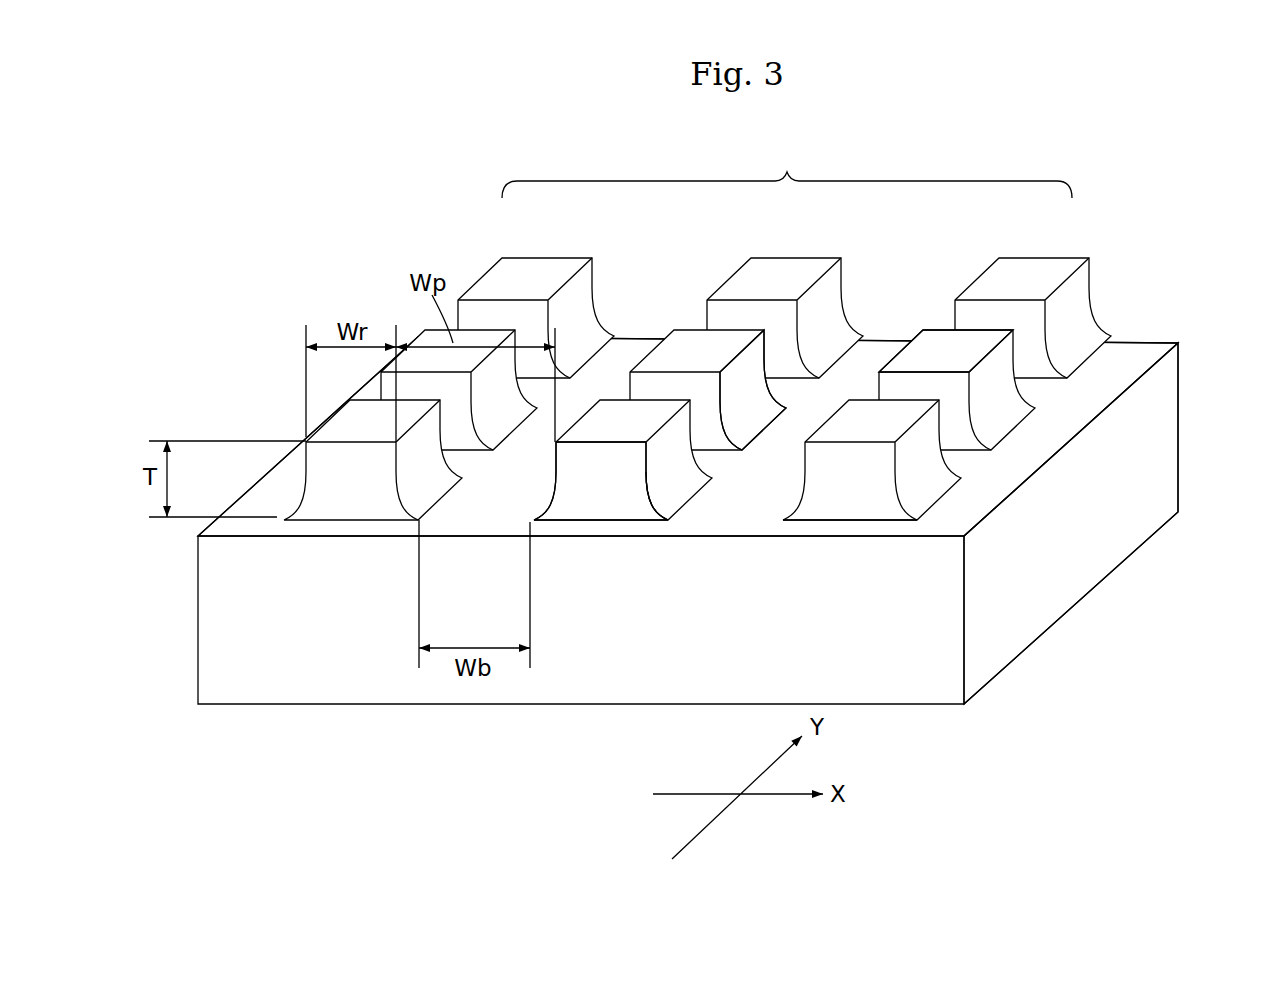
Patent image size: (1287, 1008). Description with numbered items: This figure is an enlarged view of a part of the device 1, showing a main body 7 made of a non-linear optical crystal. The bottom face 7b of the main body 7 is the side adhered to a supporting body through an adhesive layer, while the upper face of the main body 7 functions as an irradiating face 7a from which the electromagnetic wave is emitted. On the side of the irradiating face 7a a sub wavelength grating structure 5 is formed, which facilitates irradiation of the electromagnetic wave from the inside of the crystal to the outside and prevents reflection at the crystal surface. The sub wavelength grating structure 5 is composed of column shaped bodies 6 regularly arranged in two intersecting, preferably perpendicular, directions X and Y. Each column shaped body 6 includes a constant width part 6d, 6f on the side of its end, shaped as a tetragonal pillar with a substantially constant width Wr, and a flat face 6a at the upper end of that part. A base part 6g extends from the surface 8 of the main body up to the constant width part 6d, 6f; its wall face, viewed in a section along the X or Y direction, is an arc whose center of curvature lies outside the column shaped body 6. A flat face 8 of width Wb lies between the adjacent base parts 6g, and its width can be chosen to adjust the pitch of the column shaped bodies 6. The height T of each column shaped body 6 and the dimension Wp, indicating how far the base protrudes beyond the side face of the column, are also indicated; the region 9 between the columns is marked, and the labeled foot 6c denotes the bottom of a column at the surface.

The device 1 is at (1197, 303).
The sub wavelength grating structure 5 is at (787, 169).
The column shaped body 6 is at (518, 268).
The flat face 6a is at (852, 420).
The bottom edge of protrusion 6c is at (845, 527).
The constant width part 6d is at (618, 468).
The constant width part 6f is at (678, 428).
The base part 6g is at (653, 505).
The main body 7 is at (1200, 372).
The irradiating face 7a is at (1133, 355).
The bottom face 7b is at (1107, 534).
The flat face 8 is at (472, 503).
The region between protrusions 9 is at (689, 275).